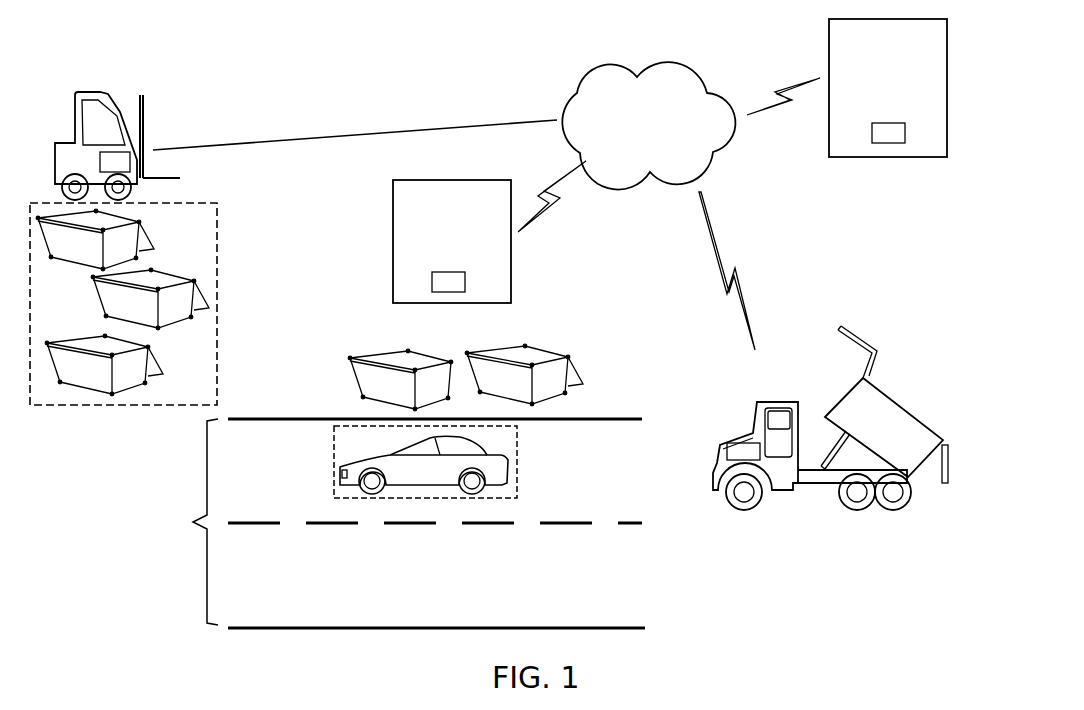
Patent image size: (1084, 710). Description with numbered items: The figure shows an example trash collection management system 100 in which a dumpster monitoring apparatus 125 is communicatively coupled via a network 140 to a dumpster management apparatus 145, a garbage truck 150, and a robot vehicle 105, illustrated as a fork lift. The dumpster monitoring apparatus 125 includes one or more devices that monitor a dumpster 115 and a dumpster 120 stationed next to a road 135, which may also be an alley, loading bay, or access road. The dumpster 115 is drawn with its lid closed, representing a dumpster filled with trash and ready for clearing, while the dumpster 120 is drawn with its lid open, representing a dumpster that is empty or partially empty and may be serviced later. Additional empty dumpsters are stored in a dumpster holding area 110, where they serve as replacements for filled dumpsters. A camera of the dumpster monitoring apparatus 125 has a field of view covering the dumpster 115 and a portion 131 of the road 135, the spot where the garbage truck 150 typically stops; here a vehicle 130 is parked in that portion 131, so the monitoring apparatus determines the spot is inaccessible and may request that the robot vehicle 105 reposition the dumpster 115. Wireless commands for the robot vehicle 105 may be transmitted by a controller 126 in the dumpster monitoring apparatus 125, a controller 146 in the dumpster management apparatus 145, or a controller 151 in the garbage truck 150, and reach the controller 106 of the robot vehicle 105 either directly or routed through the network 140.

The trash collection management system 100 is at (763, 570).
The robot vehicle 105 is at (306, 129).
The controller 106 is at (115, 162).
The dumpster holding area 110 is at (217, 275).
The dumpster 115 is at (358, 345).
The dumpster 120 is at (480, 344).
The dumpster monitoring apparatus 125 is at (489, 232).
The controller 126 is at (448, 282).
The vehicle 130 is at (385, 450).
The portion of the road 131 is at (517, 468).
The road 135 is at (405, 523).
The network 140 is at (691, 206).
The dumpster management apparatus 145 is at (888, 88).
The controller 146 is at (888, 133).
The garbage truck 150 is at (820, 418).
The controller 151 is at (731, 424).